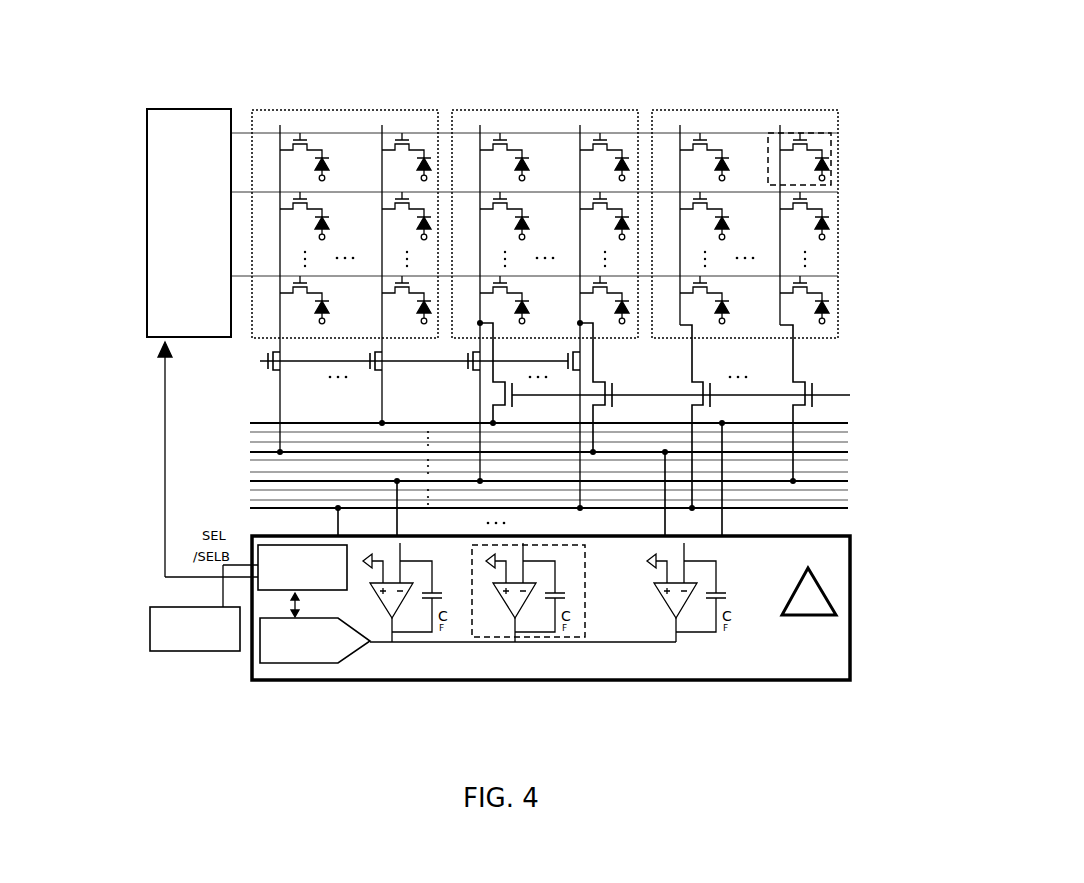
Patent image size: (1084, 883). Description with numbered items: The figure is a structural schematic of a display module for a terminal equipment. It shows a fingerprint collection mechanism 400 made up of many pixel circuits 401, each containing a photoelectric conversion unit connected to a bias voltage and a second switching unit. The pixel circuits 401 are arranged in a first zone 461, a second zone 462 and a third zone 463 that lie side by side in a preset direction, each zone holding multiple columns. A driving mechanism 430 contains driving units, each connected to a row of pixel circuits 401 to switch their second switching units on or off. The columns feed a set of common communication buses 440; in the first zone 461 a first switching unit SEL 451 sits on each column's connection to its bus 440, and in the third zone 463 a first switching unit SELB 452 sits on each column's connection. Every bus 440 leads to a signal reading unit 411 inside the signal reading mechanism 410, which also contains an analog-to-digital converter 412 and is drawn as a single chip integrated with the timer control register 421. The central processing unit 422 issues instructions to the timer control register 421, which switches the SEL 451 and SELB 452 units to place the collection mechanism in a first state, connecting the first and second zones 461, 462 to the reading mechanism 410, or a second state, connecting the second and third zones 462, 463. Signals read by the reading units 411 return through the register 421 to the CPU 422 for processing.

The fingerprint collection mechanism 400 is at (596, 264).
The pixel circuit 401 is at (835, 125).
The signal reading mechanism 410 is at (501, 646).
The signal reading unit 411 is at (502, 615).
The analog-to-digital converter (ADC) 412 is at (283, 652).
The timer control register 421 is at (277, 585).
The central processing unit 422 is at (167, 637).
The driving mechanism 430 is at (158, 204).
The common communication bus 440 is at (848, 465).
The first switching unit SEL 451 is at (260, 378).
The first switching unit SELB 452 is at (850, 395).
The first zone 461 is at (328, 110).
The second zone 462 is at (538, 110).
The third zone 463 is at (738, 110).